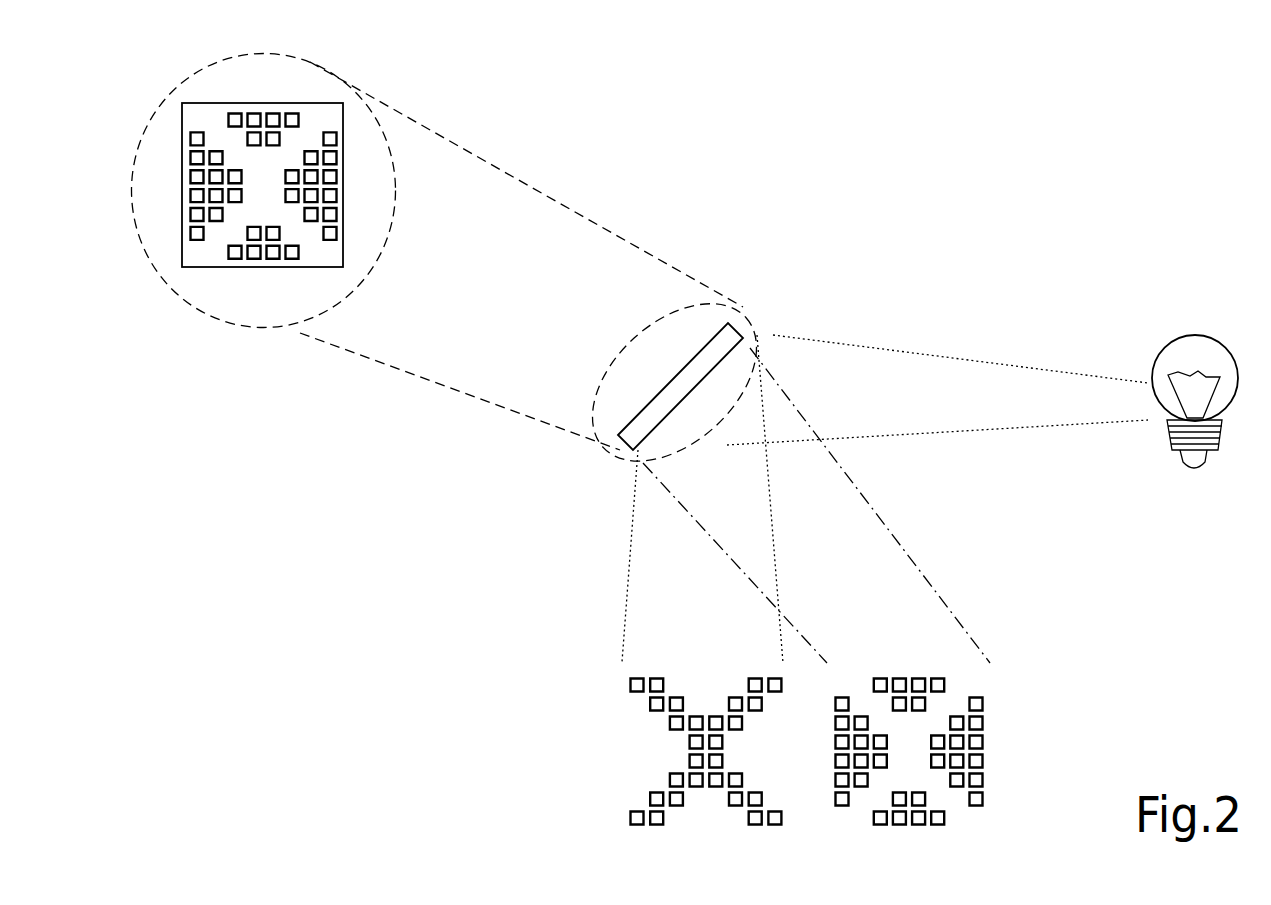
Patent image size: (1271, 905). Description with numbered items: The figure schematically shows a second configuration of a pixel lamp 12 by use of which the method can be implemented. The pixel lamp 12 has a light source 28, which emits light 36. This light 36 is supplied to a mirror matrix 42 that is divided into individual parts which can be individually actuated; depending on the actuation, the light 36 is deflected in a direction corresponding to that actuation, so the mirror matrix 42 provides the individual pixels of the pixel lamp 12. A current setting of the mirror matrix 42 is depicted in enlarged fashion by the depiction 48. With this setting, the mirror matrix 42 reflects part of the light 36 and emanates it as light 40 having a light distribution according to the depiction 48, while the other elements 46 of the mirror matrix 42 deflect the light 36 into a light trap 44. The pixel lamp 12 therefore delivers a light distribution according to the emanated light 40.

The pixel lamp 12 is at (1116, 194).
The light source 28 is at (1193, 335).
The light 36 is at (982, 387).
The emanated light 40 is at (643, 583).
The mirror matrix 42 is at (650, 403).
The light trap 44 is at (985, 740).
The other elements of the mirror matrix 46 is at (690, 742).
The enlarged depiction of mirror matrix setting 48 is at (372, 224).